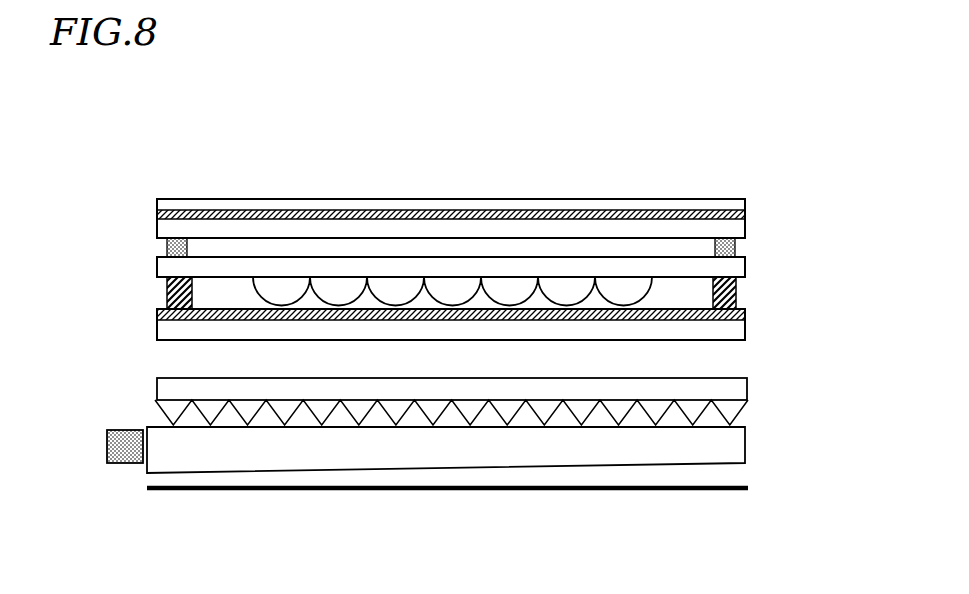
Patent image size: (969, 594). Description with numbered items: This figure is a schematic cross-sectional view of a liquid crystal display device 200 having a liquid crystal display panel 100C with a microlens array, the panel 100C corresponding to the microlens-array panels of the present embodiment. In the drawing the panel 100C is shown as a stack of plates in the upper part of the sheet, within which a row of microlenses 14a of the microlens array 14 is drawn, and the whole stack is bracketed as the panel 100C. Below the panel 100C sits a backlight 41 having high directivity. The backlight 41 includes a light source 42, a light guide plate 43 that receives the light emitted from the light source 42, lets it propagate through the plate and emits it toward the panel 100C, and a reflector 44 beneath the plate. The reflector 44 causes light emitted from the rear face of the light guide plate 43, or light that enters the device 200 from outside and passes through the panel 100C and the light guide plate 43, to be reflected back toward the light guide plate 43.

The liquid crystal display device 200 is at (750, 178).
The liquid crystal display panel 100C is at (851, 200).
The lens sheet 14 is at (541, 297).
The lens 14a is at (632, 289).
The backlight 41 is at (68, 392).
The light source 42 is at (127, 430).
The light guide plate 43 is at (148, 467).
The reflector 44 is at (197, 488).